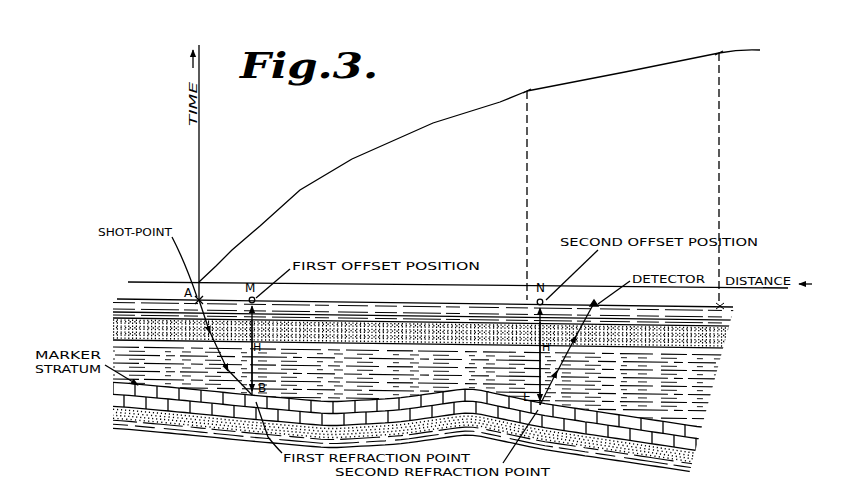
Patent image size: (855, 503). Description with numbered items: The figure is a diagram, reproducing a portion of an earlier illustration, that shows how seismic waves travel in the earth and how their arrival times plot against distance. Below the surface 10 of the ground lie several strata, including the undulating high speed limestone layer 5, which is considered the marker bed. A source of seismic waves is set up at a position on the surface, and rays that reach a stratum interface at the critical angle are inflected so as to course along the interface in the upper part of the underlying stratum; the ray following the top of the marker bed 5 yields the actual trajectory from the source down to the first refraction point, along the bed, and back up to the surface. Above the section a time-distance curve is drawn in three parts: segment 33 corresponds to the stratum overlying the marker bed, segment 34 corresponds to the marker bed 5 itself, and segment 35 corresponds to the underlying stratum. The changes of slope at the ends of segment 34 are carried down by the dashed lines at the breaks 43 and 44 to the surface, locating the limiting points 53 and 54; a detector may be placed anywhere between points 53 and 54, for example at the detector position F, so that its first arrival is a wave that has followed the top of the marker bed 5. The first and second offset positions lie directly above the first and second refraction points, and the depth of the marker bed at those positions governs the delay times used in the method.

The high speed limestone layer 5 is at (114, 393).
The surface of the ground 10 is at (139, 297).
The segment corresponding to overlying stratum 4 33 is at (478, 99).
The segment corresponding to stratum 5 (marker bed) 34 is at (637, 63).
The segment corresponding to underlying stratum 6 35 is at (755, 50).
The first break point of time-distance curve 43 is at (530, 89).
The second break point of time-distance curve 44 is at (718, 51).
The limiting point 53 is at (530, 299).
The limiting point 54 is at (724, 305).
The detector position F is at (594, 298).